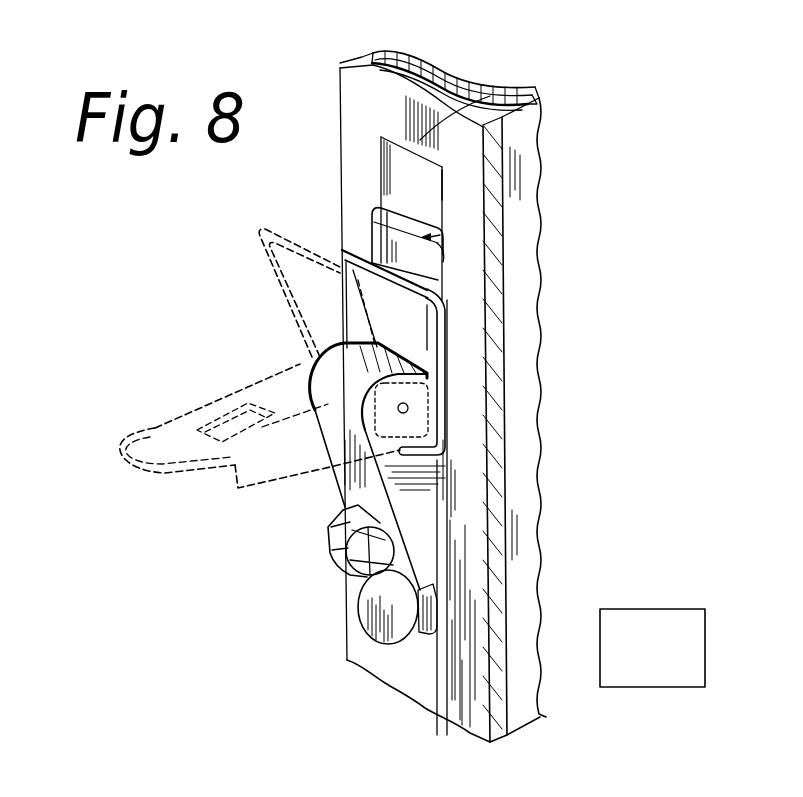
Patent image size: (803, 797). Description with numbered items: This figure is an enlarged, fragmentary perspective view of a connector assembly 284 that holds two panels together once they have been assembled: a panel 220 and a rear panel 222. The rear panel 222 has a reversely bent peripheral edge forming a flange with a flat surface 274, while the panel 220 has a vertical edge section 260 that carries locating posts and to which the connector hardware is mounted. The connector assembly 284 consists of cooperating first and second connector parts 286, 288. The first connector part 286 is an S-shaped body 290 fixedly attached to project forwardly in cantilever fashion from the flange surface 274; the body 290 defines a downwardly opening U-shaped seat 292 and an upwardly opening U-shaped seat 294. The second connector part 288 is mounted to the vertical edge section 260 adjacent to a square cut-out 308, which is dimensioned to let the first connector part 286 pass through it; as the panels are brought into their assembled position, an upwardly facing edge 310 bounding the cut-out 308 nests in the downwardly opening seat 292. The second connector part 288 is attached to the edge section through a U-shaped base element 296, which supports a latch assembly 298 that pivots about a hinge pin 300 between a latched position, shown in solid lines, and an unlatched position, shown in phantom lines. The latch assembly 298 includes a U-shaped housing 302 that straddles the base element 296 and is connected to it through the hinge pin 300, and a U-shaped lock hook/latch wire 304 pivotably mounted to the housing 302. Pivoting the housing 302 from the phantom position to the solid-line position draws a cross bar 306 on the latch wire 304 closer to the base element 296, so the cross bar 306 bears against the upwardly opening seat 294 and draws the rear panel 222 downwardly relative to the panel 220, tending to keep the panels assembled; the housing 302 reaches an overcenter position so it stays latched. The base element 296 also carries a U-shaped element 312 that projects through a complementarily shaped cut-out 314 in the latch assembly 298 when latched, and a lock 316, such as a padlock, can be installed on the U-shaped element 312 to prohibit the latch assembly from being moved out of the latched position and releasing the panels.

The panel 220 is at (360, 133).
The rear panel 222 is at (522, 470).
The vertical edge section 260 is at (383, 107).
The flat surface 274 is at (530, 80).
The connector assembly 284 is at (300, 506).
The first connector part 286 is at (440, 203).
The second connector part 288 is at (317, 429).
The S-shaped body 290 is at (442, 167).
The U-shaped seat 292 is at (440, 230).
The U-shaped seat 294 is at (440, 257).
The U-shaped base element 296 is at (375, 348).
The latch assembly 298 is at (313, 378).
The hinge pin 300 is at (408, 408).
The U-shaped housing 302 is at (175, 450).
The lock hook/latch wire 304 is at (330, 350).
The cross bar 306 is at (380, 140).
The square cut-out 308 is at (440, 196).
The upwardly facing edge 310 is at (415, 152).
The U-shaped element 312 is at (333, 551).
The cut-out 314 is at (360, 583).
The lock 316 is at (407, 573).